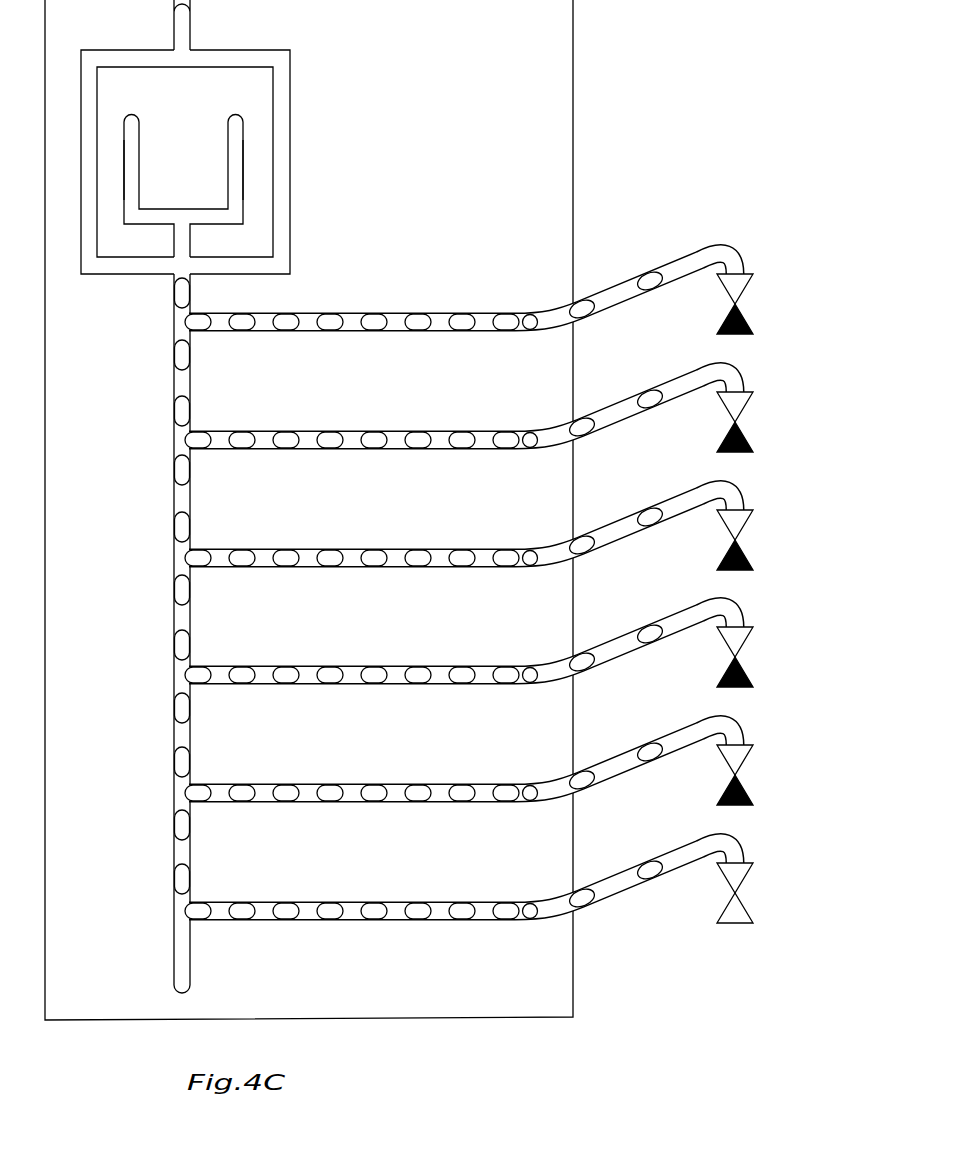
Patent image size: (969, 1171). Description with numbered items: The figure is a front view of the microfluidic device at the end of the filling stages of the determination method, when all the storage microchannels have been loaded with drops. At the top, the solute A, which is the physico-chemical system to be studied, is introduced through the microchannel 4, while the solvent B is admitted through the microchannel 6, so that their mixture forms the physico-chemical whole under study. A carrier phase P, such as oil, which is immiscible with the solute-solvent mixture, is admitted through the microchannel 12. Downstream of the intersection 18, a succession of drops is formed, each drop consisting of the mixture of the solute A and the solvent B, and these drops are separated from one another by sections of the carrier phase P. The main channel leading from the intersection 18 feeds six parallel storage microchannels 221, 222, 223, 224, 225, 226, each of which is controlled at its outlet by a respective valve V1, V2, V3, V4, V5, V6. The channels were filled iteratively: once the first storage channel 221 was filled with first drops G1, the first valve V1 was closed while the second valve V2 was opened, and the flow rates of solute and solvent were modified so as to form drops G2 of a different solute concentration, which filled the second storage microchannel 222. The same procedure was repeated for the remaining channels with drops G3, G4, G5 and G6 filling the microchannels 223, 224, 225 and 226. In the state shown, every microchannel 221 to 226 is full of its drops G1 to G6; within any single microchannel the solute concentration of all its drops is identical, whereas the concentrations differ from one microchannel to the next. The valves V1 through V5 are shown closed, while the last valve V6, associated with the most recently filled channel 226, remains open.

The microchannel 12 is at (191, 25).
The carrier phase P is at (286, 93).
The microchannel 4 is at (139, 133).
The microchannel 6 is at (228, 150).
The solute A is at (139, 180).
The solvent B is at (228, 190).
The intersection 18 is at (163, 268).
The drops G1 is at (326, 319).
The drops G2 is at (352, 425).
The drops G3 is at (352, 543).
The drops G4 is at (352, 660).
The drops G5 is at (352, 778).
The drops G6 is at (352, 896).
The first storage channel 221 is at (462, 316).
The second storage microchannel 222 is at (462, 434).
The storage microchannel 223 is at (462, 552).
The storage microchannel 224 is at (462, 669).
The storage microchannel 225 is at (462, 787).
The storage microchannel 226 is at (462, 905).
The first valve V1 is at (761, 304).
The second valve V2 is at (761, 422).
The valve V3 is at (761, 540).
The valve V4 is at (761, 657).
The valve V5 is at (761, 775).
The valve V6 is at (761, 893).